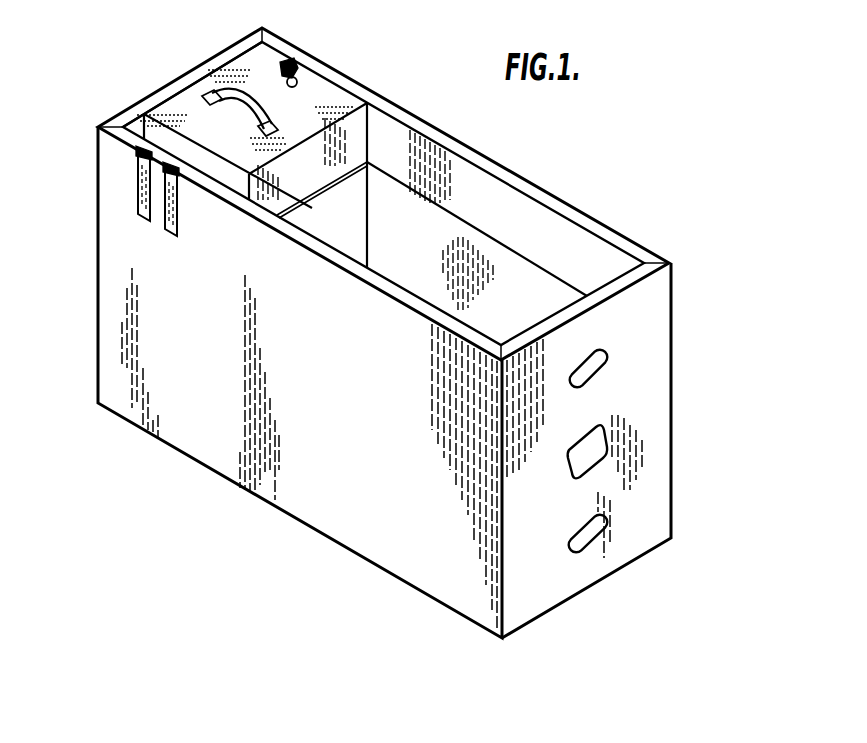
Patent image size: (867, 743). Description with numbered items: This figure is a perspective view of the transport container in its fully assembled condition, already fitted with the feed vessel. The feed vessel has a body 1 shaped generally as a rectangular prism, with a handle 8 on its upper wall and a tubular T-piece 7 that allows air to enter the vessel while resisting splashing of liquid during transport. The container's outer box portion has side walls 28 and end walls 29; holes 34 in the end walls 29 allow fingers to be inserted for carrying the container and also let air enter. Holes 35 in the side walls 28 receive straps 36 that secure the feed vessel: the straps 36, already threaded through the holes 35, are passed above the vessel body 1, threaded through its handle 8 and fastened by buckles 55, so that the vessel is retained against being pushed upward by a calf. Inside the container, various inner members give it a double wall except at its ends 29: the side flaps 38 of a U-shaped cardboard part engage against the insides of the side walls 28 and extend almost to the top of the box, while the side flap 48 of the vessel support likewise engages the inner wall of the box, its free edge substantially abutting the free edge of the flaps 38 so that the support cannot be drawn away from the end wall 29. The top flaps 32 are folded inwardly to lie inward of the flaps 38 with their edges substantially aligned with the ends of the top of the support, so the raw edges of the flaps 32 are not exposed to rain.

The body 1 is at (355, 140).
The tubular T-piece 7 is at (300, 78).
The handle 8 is at (200, 78).
The side walls 28 is at (313, 510).
The end walls 29 is at (655, 382).
The top flaps 32 is at (598, 250).
The holes 34 is at (600, 360).
The holes 35 is at (164, 237).
The straps 36 is at (177, 213).
The side flaps 38 is at (510, 257).
The side flap 48 is at (323, 224).
The buckles 55 is at (140, 131).